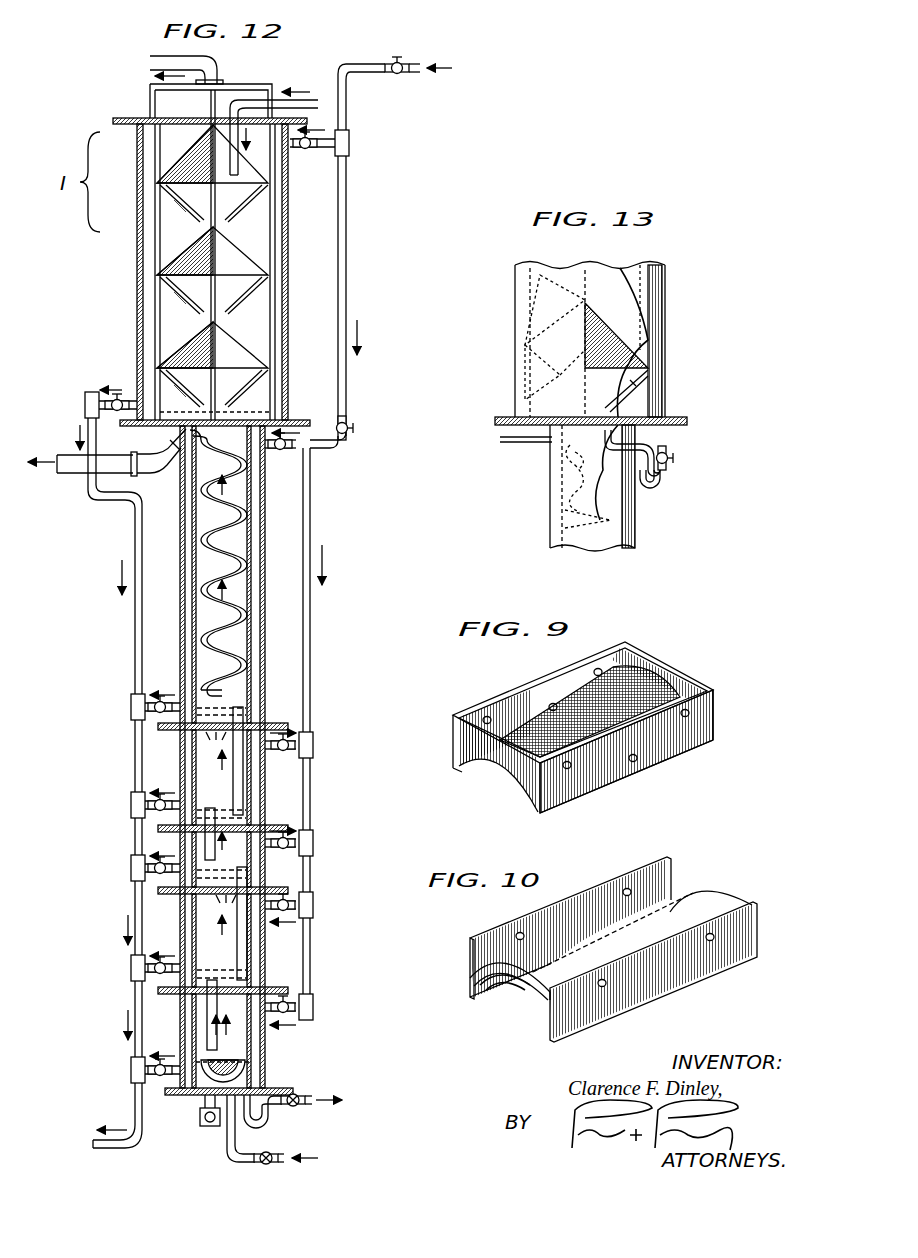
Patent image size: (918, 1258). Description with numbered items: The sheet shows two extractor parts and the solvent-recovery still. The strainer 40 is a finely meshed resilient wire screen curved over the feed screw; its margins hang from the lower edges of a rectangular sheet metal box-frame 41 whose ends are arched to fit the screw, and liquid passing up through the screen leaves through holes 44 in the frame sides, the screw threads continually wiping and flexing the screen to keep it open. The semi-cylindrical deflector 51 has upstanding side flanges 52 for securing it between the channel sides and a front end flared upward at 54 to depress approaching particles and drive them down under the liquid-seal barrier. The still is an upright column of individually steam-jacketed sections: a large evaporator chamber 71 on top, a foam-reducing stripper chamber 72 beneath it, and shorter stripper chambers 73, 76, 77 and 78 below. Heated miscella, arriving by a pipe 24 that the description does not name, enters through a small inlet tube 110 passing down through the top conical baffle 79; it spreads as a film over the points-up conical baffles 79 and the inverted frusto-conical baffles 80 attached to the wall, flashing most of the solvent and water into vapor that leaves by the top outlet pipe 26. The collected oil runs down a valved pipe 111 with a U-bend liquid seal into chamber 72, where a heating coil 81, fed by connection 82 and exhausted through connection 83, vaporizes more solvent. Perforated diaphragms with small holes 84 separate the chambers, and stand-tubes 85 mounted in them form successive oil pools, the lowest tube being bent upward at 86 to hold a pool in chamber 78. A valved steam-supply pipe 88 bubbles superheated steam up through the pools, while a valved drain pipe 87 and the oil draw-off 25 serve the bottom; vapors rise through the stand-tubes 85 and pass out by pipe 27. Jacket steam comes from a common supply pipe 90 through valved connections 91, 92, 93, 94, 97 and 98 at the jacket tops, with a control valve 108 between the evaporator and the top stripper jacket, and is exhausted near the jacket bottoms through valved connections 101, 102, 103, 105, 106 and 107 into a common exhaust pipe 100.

In FIG. 12, the inlet pipe 24 is at (316, 100).
In FIG. 12, the oil draw-off 25 is at (298, 1108).
In FIG. 12, the top outlet pipe 26 is at (190, 62).
In FIG. 12, the vapor pipe 27 is at (66, 468).
In FIG. 9, the strainer 40 is at (668, 684).
In FIG. 9, the box-frame 41 is at (714, 700).
In FIG. 9, the holes 44 is at (550, 704).
In FIG. 10, the deflector 51 is at (718, 893).
In FIG. 10, the side flanges 52 is at (670, 866).
In FIG. 10, the flared front end 54 is at (524, 983).
In FIG. 12, the evaporator chamber 71 is at (140, 252).
In FIG. 13, the evaporator chamber 71 is at (660, 349).
In FIG. 12, the foam-reducing stripper chamber 72 is at (192, 592).
In FIG. 13, the foam-reducing stripper chamber 72 is at (636, 530).
In FIG. 12, the stripper chamber 73 is at (252, 798).
In FIG. 12, the stripper chamber 76 is at (252, 873).
In FIG. 12, the stripper chamber 77 is at (252, 951).
In FIG. 12, the lowermost stripper chamber 78 is at (252, 1052).
In FIG. 12, the conical baffles 79 is at (198, 150).
In FIG. 13, the conical baffles 79 is at (648, 290).
In FIG. 12, the inverted frusto-conical baffle 80 is at (185, 210).
In FIG. 13, the inverted frusto-conical baffle 80 is at (570, 312).
In FIG. 12, the heating coil 81 is at (244, 520).
In FIG. 13, the heating coil 81 is at (560, 520).
In FIG. 12, the steam connection 82 is at (215, 442).
In FIG. 13, the steam connection 82 is at (512, 444).
In FIG. 12, the exhaust connection 83 is at (226, 691).
In FIG. 12, the small holes 84 is at (221, 865).
In FIG. 12, the stand-tubes 85 is at (232, 790).
In FIG. 12, the upturned bend 86 is at (250, 1072).
In FIG. 12, the drain pipe 87 is at (200, 1110).
In FIG. 12, the steam-supply pipe 88 is at (226, 1132).
In FIG. 12, the steam supply pipe 90 is at (365, 74).
In FIG. 12, the valved connection 91 is at (308, 152).
In FIG. 12, the valved connection 92 is at (280, 456).
In FIG. 12, the valved connection 93 is at (284, 755).
In FIG. 12, the valved connection 94 is at (296, 837).
In FIG. 12, the valved connection 97 is at (300, 900).
In FIG. 12, the valved connection 98 is at (290, 1015).
In FIG. 12, the exhaust pipe 100 is at (133, 522).
In FIG. 12, the valved exhaust connection 101 is at (112, 415).
In FIG. 12, the valved exhaust connection 102 is at (150, 714).
In FIG. 12, the valved exhaust connection 103 is at (148, 802).
In FIG. 12, the valved exhaust connection 105 is at (150, 876).
In FIG. 12, the valved exhaust connection 106 is at (150, 976).
In FIG. 12, the valved exhaust connection 107 is at (150, 1078).
In FIG. 12, the control valve 108 is at (350, 422).
In FIG. 12, the inlet tube 110 is at (229, 115).
In FIG. 13, the valved seal pipe 111 is at (672, 479).